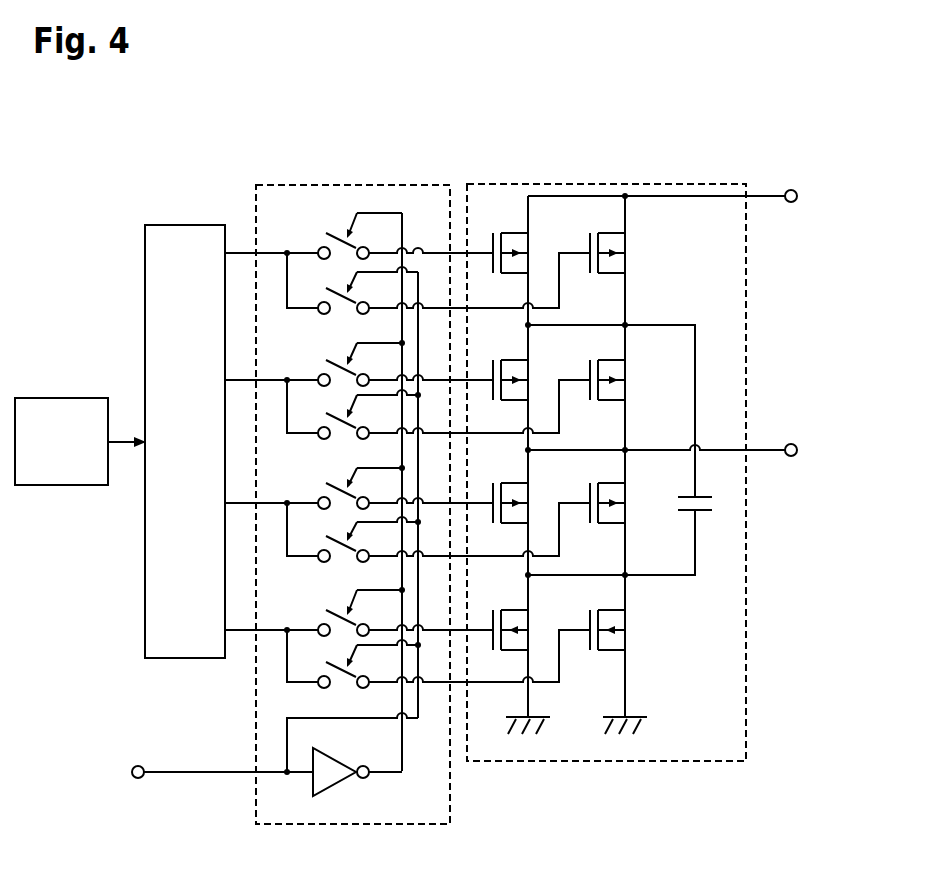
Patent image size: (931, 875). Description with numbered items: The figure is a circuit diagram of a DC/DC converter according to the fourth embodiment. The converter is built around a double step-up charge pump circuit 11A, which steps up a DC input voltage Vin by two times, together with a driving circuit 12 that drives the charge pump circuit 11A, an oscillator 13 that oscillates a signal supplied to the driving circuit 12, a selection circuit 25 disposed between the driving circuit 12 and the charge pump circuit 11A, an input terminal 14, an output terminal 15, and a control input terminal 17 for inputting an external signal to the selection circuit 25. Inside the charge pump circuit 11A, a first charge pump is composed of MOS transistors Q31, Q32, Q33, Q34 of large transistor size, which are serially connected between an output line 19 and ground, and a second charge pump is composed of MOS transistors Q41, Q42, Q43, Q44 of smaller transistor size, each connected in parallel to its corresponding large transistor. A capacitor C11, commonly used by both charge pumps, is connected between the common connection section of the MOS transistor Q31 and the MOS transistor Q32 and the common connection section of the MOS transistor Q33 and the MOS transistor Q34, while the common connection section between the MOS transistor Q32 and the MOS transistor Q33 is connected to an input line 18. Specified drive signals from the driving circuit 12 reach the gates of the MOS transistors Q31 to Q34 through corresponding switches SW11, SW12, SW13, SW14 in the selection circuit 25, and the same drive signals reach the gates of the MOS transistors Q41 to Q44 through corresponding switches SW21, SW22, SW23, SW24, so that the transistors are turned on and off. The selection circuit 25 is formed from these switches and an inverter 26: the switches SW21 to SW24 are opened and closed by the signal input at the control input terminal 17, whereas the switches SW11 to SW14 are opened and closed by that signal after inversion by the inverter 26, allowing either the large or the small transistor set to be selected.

The double step-up charge pump circuit 11A is at (597, 184).
The driving circuit 12 is at (175, 225).
The oscillator 13 is at (60, 487).
The input terminal 14 is at (792, 443).
The output terminal 15 is at (792, 189).
The control input terminal 17 is at (138, 762).
The input line 18 is at (722, 443).
The output line 19 is at (712, 198).
The selection circuit 25 is at (343, 185).
The inverter 26 is at (340, 757).
The switch SW11 is at (359, 236).
The switch SW21 is at (438, 298).
The switch SW12 is at (359, 363).
The switch SW22 is at (438, 424).
The switch SW13 is at (359, 487).
The switch SW23 is at (438, 547).
The switch SW14 is at (359, 611).
The switch SW24 is at (438, 673).
The MOS transistor Q31 is at (506, 237).
The MOS transistor Q41 is at (628, 253).
The MOS transistor Q32 is at (506, 364).
The MOS transistor Q42 is at (628, 380).
The MOS transistor Q33 is at (506, 487).
The MOS transistor Q43 is at (628, 503).
The MOS transistor Q34 is at (506, 614).
The MOS transistor Q44 is at (628, 630).
The capacitor C11 is at (707, 520).